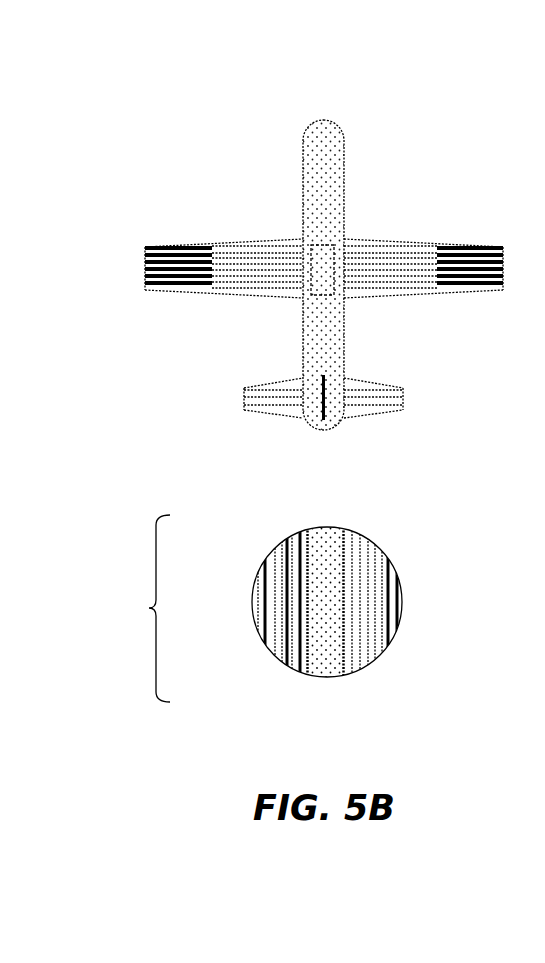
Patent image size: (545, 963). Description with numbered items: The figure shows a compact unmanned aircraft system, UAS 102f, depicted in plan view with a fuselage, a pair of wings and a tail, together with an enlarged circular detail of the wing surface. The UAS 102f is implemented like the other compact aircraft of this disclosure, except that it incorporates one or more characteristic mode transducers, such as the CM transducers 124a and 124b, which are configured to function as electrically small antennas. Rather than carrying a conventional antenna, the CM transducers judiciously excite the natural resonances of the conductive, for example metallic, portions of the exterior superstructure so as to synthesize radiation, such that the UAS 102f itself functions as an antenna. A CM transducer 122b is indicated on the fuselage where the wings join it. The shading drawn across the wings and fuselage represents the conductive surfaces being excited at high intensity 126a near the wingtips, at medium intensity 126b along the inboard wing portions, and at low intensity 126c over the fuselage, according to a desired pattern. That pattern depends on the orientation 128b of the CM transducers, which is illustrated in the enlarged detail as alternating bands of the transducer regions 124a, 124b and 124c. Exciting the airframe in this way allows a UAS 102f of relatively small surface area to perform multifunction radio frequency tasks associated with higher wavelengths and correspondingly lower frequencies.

The UAS 102f is at (103, 98).
The low intensity excitation 126c is at (312, 150).
The medium intensity excitation 126b is at (270, 256).
The high intensity excitation 126a is at (167, 270).
The CM transducer 122b is at (322, 247).
The orientation 128b is at (150, 609).
The CM transducer 124a is at (262, 600).
The CM transducer 124b is at (288, 556).
The third fiber layer region 124c is at (326, 548).